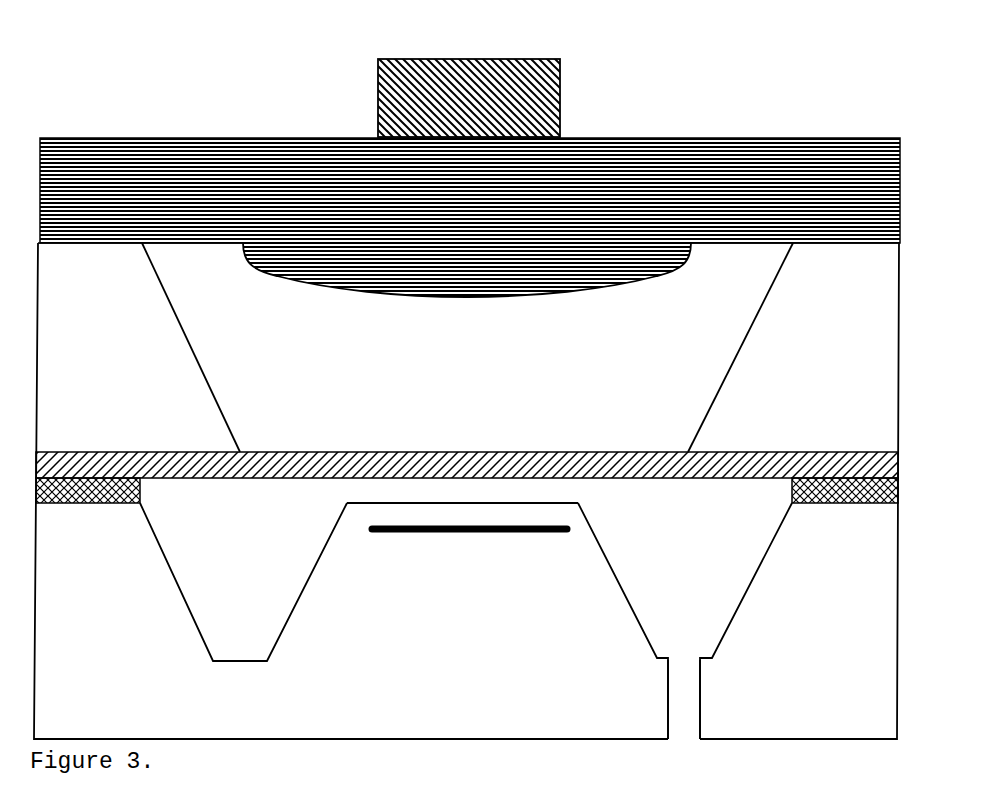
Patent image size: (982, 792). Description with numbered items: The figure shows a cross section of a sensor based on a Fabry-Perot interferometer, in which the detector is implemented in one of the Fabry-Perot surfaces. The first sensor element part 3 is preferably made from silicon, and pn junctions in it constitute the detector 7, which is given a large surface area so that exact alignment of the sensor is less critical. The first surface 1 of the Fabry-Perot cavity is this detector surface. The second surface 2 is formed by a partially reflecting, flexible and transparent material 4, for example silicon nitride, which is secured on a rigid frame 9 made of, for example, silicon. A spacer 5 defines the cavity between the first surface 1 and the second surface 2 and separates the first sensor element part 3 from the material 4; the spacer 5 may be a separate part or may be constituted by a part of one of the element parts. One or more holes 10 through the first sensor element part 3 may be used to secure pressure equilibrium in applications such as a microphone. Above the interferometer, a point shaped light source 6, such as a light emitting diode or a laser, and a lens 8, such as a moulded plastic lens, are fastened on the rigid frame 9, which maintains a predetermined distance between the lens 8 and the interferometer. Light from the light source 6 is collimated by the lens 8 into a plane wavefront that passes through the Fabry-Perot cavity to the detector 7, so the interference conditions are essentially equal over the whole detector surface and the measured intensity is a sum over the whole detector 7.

The first surface 1 is at (563, 502).
The second surface 2 is at (293, 478).
The first sensor element part 3 is at (466, 491).
The partially reflecting flexible and transparent material 4 is at (740, 452).
The spacer 5 is at (785, 487).
The light source 6 is at (573, 70).
The detector 7 is at (500, 540).
The lens 8 is at (555, 293).
The rigid frame 9 is at (200, 330).
The hole 10 is at (710, 697).